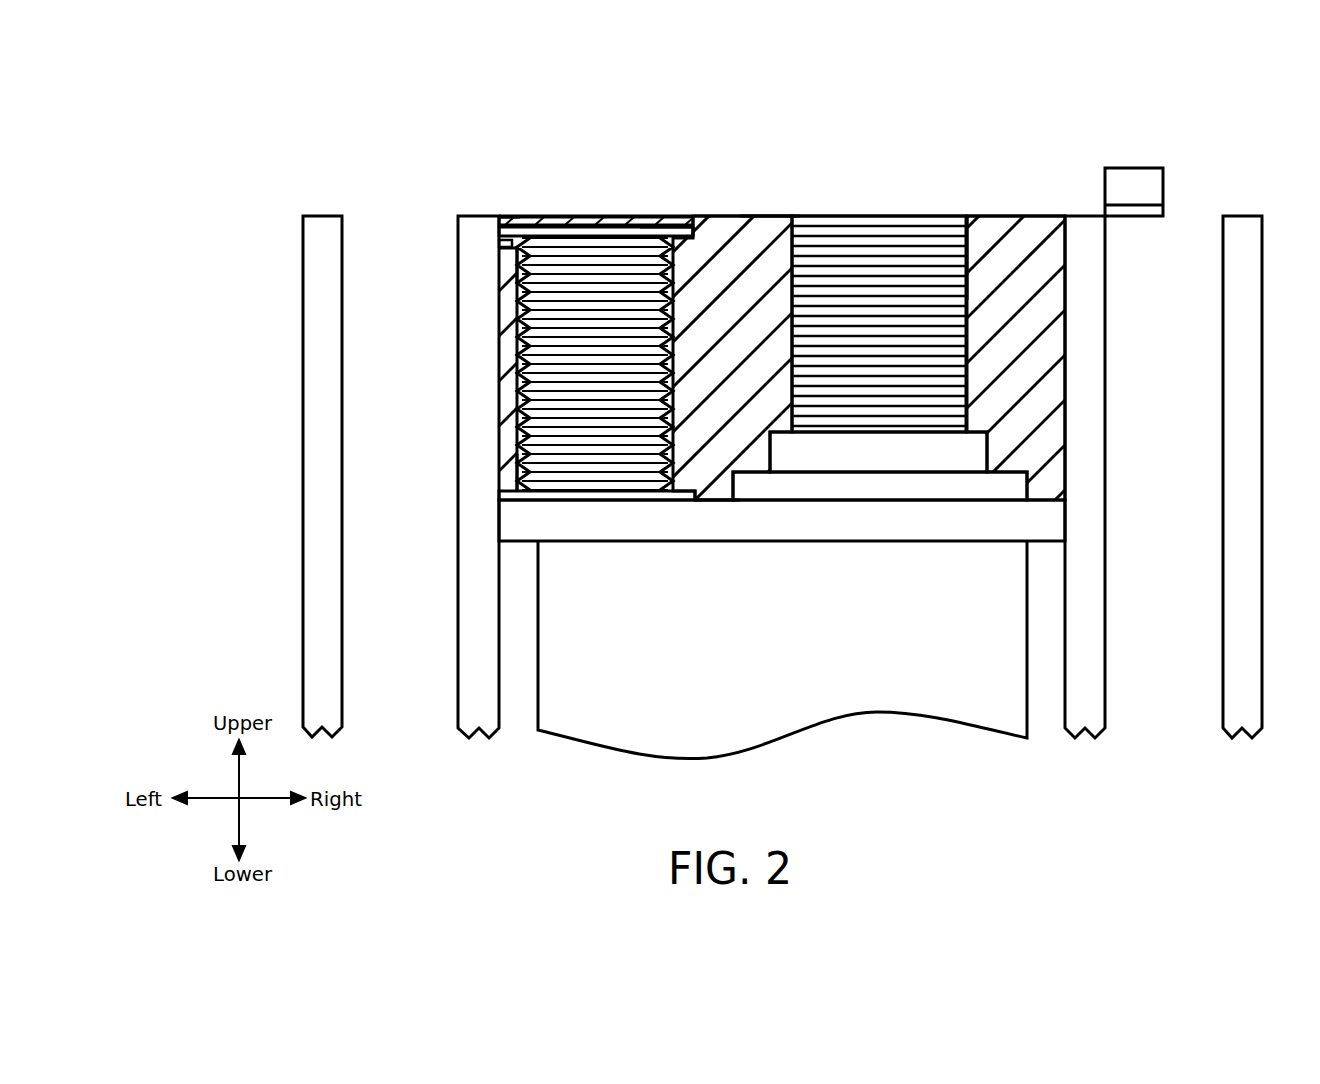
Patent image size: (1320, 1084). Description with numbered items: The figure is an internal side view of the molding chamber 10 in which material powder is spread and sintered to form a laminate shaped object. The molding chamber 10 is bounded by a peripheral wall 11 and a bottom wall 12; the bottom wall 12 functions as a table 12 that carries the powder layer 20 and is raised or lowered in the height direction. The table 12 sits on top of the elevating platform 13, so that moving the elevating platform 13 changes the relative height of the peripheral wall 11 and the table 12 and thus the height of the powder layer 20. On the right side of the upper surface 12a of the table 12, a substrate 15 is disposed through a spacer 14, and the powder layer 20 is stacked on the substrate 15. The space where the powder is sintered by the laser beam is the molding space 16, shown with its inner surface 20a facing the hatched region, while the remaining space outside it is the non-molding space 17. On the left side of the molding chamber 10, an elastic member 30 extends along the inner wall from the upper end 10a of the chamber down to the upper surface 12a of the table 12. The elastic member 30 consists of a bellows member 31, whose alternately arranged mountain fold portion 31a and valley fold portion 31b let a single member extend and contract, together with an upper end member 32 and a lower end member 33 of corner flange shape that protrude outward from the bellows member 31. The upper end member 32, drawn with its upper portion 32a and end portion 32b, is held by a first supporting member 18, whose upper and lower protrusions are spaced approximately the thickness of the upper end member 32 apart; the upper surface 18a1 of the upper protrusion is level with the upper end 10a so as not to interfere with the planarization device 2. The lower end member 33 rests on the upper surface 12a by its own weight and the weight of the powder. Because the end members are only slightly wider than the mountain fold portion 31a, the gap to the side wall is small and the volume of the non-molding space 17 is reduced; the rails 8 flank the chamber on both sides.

The planarization device 2 is at (1143, 178).
The rail 8 is at (382, 232).
The molding chamber 10 is at (980, 205).
The upper end 10a is at (752, 212).
The peripheral wall 11 is at (482, 617).
The bottom wall 12 is at (1008, 527).
The upper surface 12a is at (705, 497).
The elevating platform 13 is at (1005, 648).
The spacer 14 is at (920, 490).
The substrate 15 is at (853, 460).
The molding space 16 is at (878, 277).
The non-molding space 17 is at (1027, 343).
The first supporting member 18 is at (595, 220).
The upper surface 18a1 is at (507, 217).
The powder layer 20 is at (1008, 230).
The side support member inner surface 20a is at (892, 222).
The elastic member 30 is at (521, 383).
The bellows member 31 is at (565, 408).
The mountain fold portion 31a is at (515, 423).
The valley fold portion 31b is at (517, 473).
The upper end member 32 is at (697, 217).
The top plate upper portion 32a is at (673, 217).
The top plate end portion 32b is at (690, 232).
The lower end member 33 is at (583, 493).